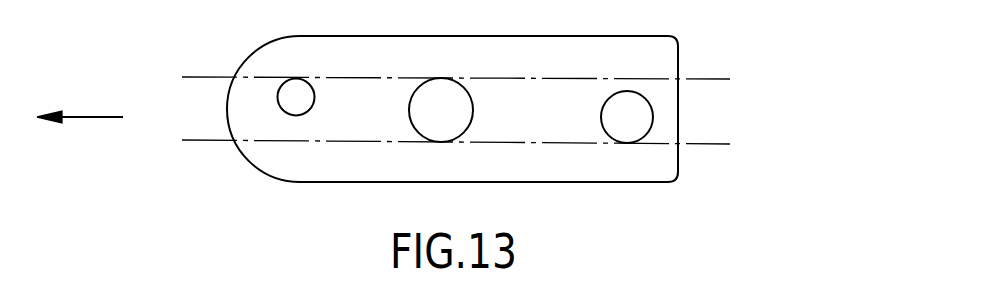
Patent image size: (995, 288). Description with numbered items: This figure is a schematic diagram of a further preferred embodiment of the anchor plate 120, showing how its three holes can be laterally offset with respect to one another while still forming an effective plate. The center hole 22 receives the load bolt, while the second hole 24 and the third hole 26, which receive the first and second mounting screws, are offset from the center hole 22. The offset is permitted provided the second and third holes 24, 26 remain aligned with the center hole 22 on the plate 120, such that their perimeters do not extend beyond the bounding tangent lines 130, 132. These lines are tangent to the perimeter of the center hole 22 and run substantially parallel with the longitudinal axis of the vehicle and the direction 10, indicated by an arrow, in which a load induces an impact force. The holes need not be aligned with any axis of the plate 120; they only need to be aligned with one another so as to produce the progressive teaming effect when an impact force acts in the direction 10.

The direction 10 is at (78, 118).
The center hole 22 is at (453, 127).
The second hole 24 is at (288, 104).
The third hole 26 is at (633, 132).
The anchor plate 120 is at (680, 47).
The bounding tangent line 130 is at (718, 79).
The bounding tangent line 132 is at (725, 144).